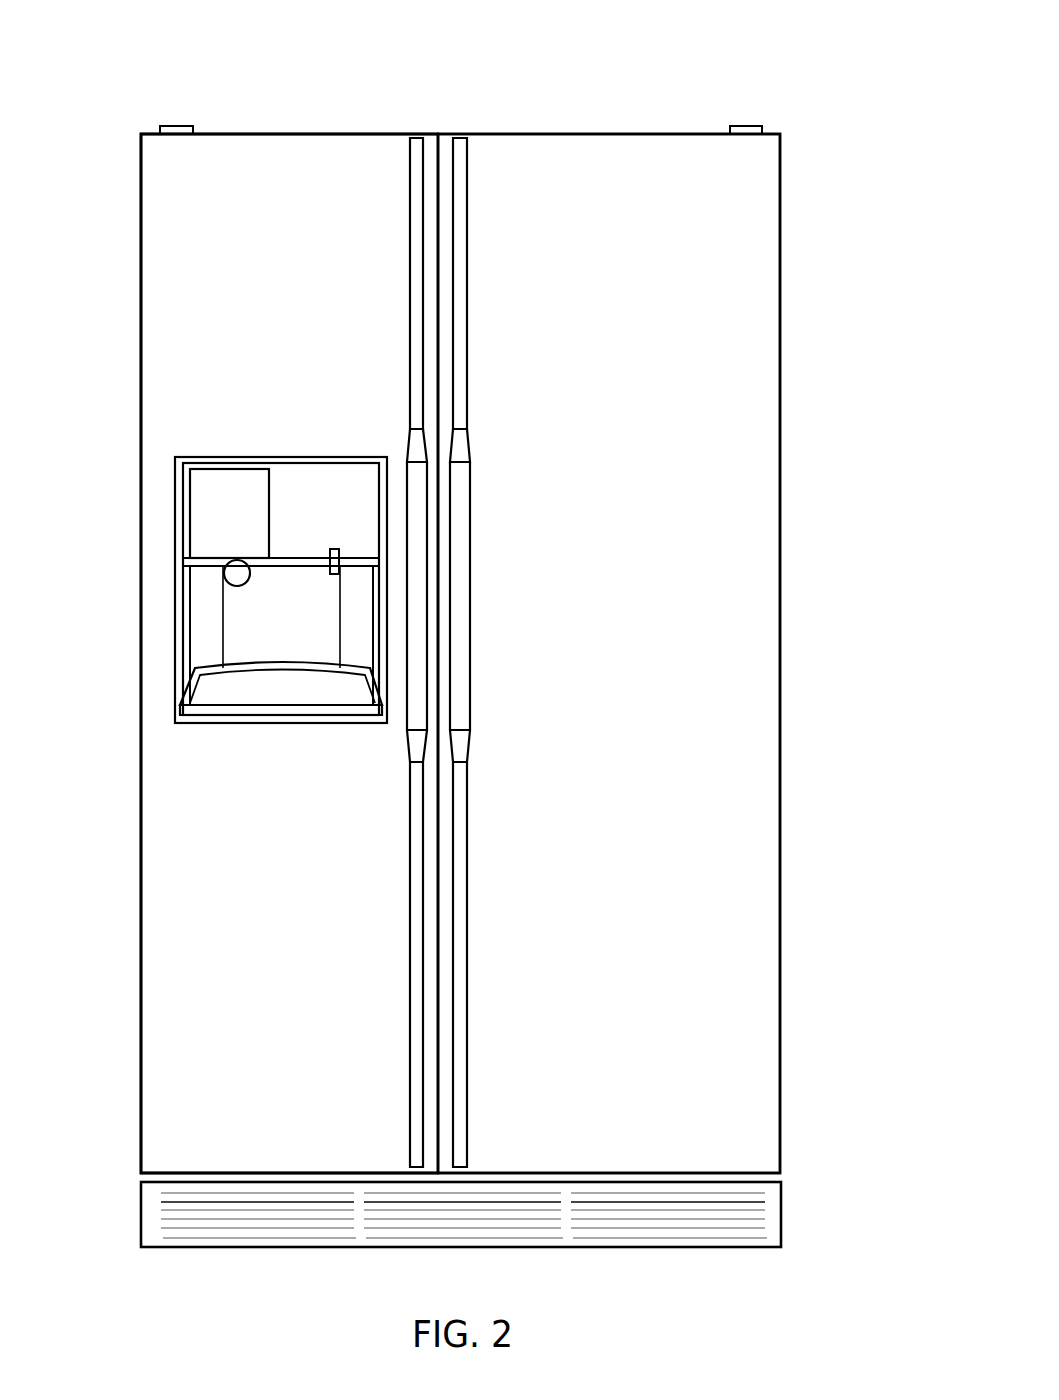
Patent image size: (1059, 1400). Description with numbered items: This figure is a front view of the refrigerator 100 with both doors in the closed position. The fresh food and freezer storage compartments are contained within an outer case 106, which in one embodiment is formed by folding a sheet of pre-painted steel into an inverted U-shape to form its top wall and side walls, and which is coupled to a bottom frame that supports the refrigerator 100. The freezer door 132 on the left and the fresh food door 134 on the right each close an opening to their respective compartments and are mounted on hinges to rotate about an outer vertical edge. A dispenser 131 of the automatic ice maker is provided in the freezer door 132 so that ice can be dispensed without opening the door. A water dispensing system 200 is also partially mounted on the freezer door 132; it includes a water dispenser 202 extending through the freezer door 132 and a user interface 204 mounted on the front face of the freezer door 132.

The refrigerator 100 is at (672, 90).
The outer case 106 is at (153, 1042).
The dispenser 131 is at (298, 398).
The freezer door 132 is at (151, 299).
The fresh food door 134 is at (770, 588).
The water dispensing system 200 is at (176, 536).
The water dispenser 202 is at (245, 581).
The user interface 204 is at (221, 480).